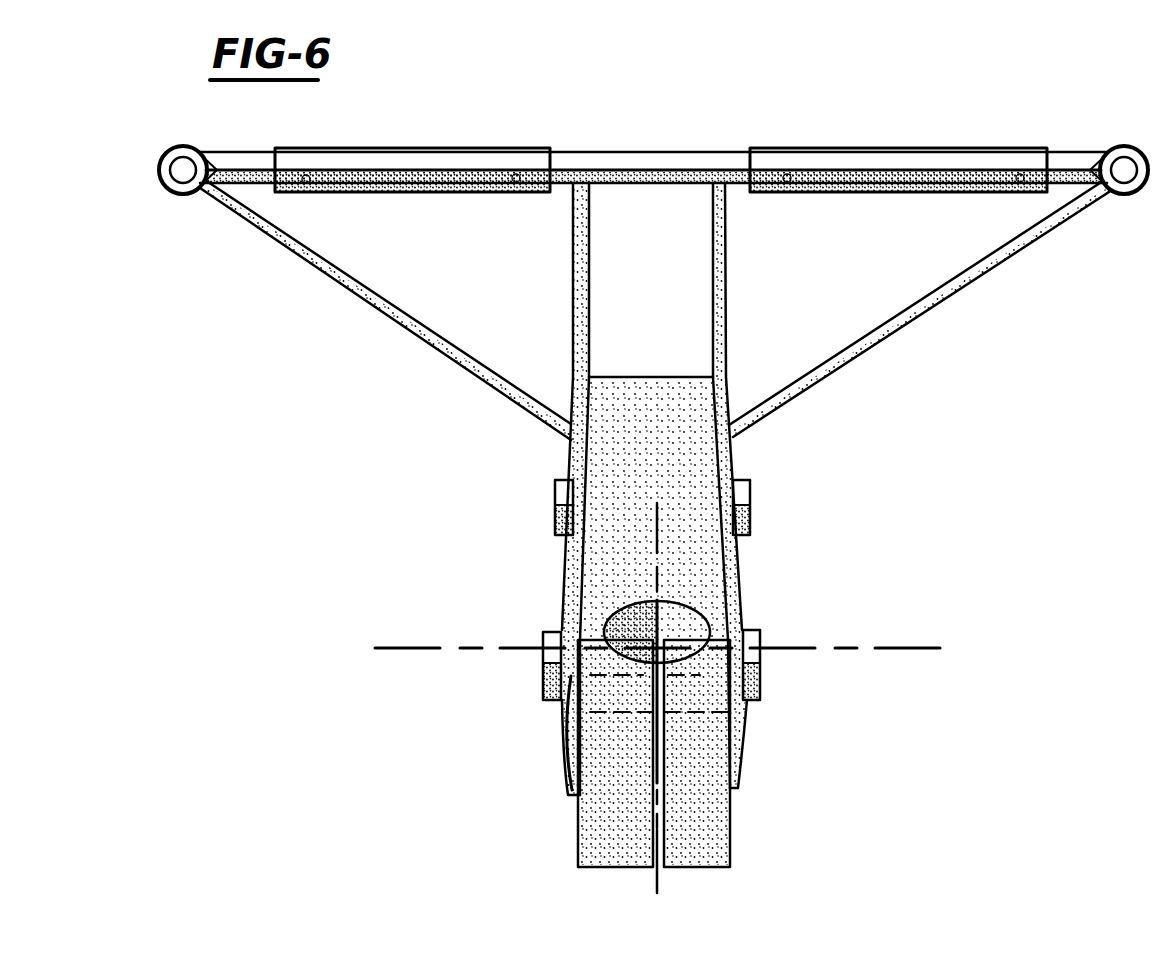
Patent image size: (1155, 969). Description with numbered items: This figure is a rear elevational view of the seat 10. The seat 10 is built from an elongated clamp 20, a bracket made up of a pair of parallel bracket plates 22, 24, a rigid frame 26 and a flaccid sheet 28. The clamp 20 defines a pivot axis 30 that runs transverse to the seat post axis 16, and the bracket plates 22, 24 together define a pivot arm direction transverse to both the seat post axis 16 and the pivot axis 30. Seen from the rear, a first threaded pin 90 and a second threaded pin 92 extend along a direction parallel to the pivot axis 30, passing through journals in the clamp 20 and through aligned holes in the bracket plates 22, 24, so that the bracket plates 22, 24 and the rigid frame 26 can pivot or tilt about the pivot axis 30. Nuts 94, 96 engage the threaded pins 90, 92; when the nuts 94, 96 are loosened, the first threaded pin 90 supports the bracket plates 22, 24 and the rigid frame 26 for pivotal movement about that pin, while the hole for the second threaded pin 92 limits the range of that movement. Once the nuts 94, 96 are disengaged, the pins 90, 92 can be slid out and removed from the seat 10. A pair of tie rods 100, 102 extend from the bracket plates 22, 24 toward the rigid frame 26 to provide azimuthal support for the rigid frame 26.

The seat 10 is at (925, 505).
The seat post axis 16 is at (707, 677).
The clamp 20 is at (645, 395).
The bracket plate 22 is at (573, 262).
The bracket plate 24 is at (728, 275).
The rigid frame 26 is at (660, 158).
The flaccid sheet 28 is at (1068, 160).
The pivot axis 30 is at (897, 621).
The first threaded pin 90 is at (521, 636).
The second threaded pin 92 is at (557, 500).
The nut 94 is at (801, 646).
The nut 96 is at (750, 517).
The tie rod 100 is at (372, 302).
The tie rod 102 is at (1002, 262).